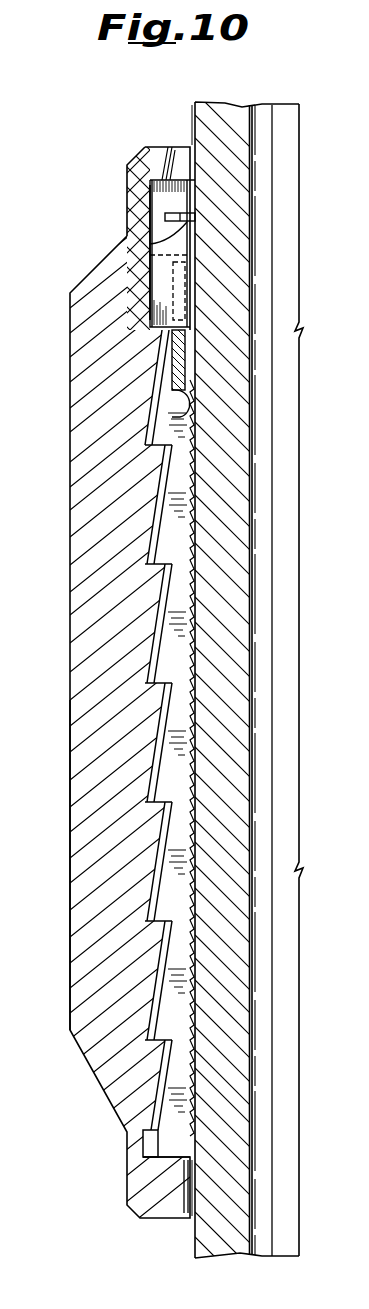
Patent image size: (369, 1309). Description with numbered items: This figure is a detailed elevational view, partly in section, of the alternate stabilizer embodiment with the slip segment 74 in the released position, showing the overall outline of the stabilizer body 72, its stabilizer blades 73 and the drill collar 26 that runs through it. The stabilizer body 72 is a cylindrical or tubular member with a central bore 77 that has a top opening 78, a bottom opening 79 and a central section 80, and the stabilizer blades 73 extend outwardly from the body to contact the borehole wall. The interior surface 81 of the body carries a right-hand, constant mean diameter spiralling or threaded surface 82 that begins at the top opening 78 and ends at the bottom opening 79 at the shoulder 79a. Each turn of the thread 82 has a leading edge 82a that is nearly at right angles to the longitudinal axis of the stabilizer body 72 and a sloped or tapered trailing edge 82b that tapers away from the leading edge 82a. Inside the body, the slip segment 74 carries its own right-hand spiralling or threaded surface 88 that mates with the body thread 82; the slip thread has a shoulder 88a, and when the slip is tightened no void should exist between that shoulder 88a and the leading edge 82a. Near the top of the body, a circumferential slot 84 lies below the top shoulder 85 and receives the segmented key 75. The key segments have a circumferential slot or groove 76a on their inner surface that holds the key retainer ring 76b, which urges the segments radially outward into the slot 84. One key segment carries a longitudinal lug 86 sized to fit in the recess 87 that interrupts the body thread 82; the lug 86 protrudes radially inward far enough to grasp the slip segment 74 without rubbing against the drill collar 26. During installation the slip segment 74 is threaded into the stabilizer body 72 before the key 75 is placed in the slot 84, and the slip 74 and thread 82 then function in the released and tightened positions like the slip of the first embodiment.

The drill collar 26 is at (226, 103).
The stabilizer body 72 is at (103, 382).
The stabilizer blades 73 is at (75, 341).
The slip segment 74 is at (162, 545).
The key 75 is at (150, 212).
The circumferential slot or groove 76a is at (158, 242).
The key retainer ring 76b is at (165, 218).
The central bore 77 is at (183, 130).
The top opening 78 is at (176, 160).
The bottom opening 79 is at (178, 1222).
The shoulder 79a is at (140, 1150).
The central section 80 is at (85, 760).
The interior surface 81 is at (157, 612).
The spiralling or threaded surface 82 is at (152, 732).
The leading edge 82a is at (150, 808).
The trailing edge 82b is at (150, 858).
The circumferential slot 84 is at (158, 202).
The top shoulder 85 is at (155, 190).
The lug 86 is at (165, 285).
The recess 87 is at (147, 311).
The spiralling or threaded surface 88 is at (172, 590).
The shoulder 88a is at (170, 680).